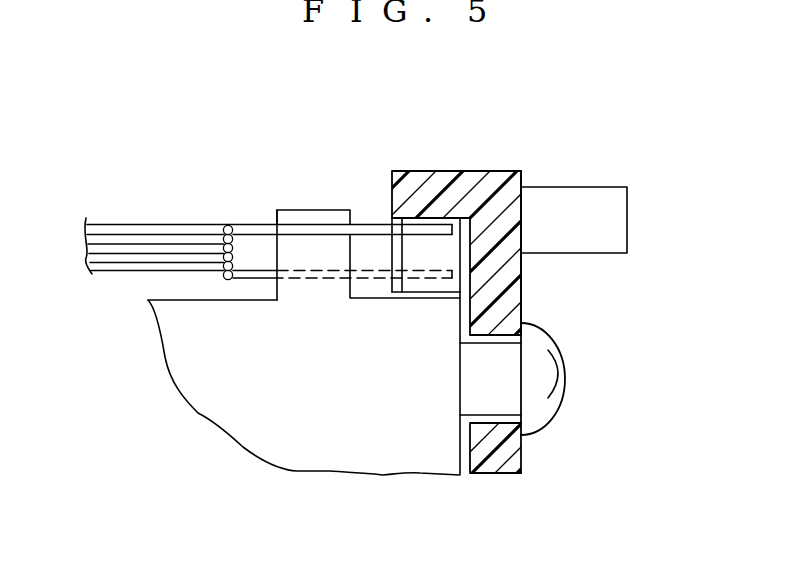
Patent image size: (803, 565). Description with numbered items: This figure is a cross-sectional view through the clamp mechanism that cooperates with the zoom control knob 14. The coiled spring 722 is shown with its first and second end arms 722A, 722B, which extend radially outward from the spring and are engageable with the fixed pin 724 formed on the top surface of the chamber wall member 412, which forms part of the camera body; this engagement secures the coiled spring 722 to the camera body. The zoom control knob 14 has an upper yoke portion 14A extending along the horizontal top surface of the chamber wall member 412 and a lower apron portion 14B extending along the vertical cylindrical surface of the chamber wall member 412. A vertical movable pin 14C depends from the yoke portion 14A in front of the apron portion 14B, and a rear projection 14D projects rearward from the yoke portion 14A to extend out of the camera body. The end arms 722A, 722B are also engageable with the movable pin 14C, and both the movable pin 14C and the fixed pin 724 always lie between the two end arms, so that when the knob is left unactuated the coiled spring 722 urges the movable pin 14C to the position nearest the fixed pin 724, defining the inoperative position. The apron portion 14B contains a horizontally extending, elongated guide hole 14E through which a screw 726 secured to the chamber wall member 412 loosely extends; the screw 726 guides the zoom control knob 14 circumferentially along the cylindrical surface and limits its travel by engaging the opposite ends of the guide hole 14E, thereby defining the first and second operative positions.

The coiled spring 722 is at (112, 222).
The first end arm 722A is at (372, 224).
The second end arm 722B is at (377, 275).
The fixed pin 724 is at (310, 210).
The chamber wall member 412 is at (263, 368).
The zoom control knob 14 is at (547, 142).
The upper yoke portion 14A is at (447, 178).
The lower apron portion 14B is at (510, 460).
The movable pin 14C is at (442, 246).
The rear projection 14D is at (595, 195).
The guide hole 14E is at (496, 423).
The screw 726 is at (575, 397).